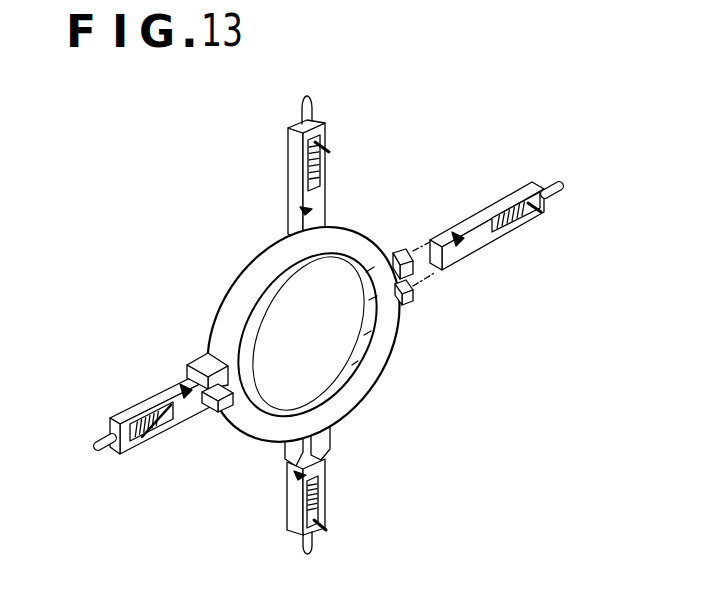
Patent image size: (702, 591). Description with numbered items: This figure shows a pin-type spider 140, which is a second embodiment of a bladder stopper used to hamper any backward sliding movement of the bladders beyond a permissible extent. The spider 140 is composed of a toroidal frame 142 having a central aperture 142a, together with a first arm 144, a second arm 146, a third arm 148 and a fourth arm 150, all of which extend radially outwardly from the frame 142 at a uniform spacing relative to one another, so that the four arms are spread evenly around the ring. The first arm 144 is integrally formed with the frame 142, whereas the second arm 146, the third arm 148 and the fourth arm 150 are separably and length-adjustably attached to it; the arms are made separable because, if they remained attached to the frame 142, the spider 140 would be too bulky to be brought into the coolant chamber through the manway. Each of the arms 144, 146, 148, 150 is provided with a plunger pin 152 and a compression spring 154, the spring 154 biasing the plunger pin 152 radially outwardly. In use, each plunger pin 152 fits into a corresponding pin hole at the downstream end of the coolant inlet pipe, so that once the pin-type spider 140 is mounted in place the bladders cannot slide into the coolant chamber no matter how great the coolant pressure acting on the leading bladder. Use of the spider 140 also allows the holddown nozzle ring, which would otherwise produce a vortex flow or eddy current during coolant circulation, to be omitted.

The pin-type spider 140 is at (240, 266).
The toroidal frame 142 is at (285, 334).
The central aperture 142a is at (280, 307).
The first arm 144 is at (307, 211).
The second arm 146 is at (480, 244).
The third arm 148 is at (318, 470).
The fourth arm 150 is at (189, 406).
The plunger pin 152 is at (310, 97).
The compression spring 154 is at (322, 168).